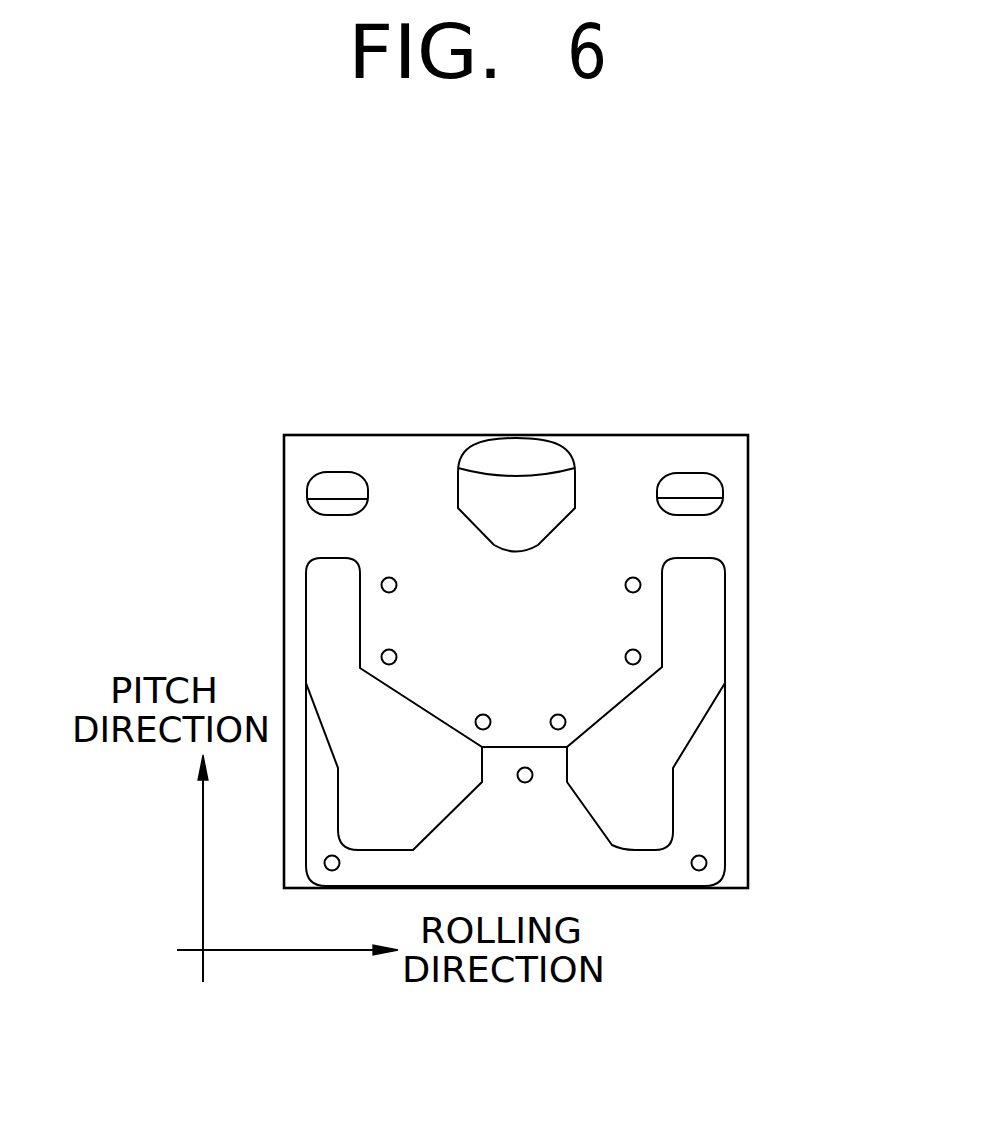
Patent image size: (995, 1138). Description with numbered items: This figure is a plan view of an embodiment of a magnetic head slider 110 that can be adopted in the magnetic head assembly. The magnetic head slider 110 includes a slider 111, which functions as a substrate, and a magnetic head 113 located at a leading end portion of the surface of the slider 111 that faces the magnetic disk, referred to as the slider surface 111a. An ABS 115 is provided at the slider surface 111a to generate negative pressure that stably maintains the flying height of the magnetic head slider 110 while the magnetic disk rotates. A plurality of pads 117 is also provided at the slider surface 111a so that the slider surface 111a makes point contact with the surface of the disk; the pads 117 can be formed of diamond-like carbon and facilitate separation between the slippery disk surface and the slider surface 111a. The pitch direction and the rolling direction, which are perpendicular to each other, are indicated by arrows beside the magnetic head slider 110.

The magnetic head slider 110 is at (243, 448).
The slider 111 is at (750, 481).
The slider surface 111a is at (630, 458).
The magnetic head 113 is at (517, 452).
The ABS 115 is at (330, 618).
The pads 117 is at (623, 590).